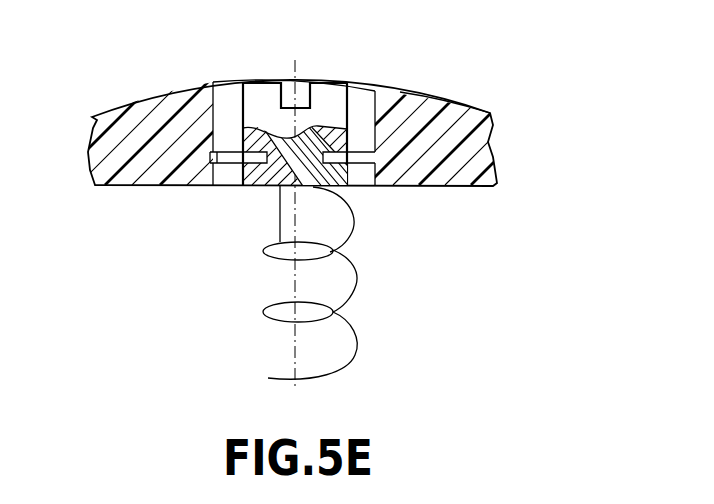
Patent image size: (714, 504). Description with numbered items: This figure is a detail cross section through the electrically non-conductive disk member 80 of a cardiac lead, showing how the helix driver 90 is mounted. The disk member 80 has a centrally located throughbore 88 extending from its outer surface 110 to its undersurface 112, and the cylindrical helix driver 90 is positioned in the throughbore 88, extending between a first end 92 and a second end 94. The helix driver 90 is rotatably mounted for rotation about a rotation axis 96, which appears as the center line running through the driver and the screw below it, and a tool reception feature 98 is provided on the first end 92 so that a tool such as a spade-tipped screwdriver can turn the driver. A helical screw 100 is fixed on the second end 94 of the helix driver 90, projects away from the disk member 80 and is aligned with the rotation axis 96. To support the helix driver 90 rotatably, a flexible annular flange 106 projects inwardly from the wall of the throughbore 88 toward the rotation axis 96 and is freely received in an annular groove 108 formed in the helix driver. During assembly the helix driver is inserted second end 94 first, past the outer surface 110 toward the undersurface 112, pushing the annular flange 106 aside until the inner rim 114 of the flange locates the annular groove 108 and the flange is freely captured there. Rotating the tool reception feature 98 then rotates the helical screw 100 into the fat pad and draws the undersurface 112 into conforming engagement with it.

The disk member 80 is at (316, 118).
The throughbore 88 is at (375, 110).
The helix driver 90 is at (344, 72).
The first end 92 is at (267, 102).
The second end 94 is at (268, 186).
The rotation axis 96 is at (292, 76).
The tool reception feature 98 is at (310, 88).
The helical screw 100 is at (275, 282).
The annular flange 106 is at (216, 161).
The annular groove 108 is at (336, 160).
The outer surface 110 is at (459, 105).
The undersurface 112 is at (123, 188).
The inner rim 114 is at (280, 248).